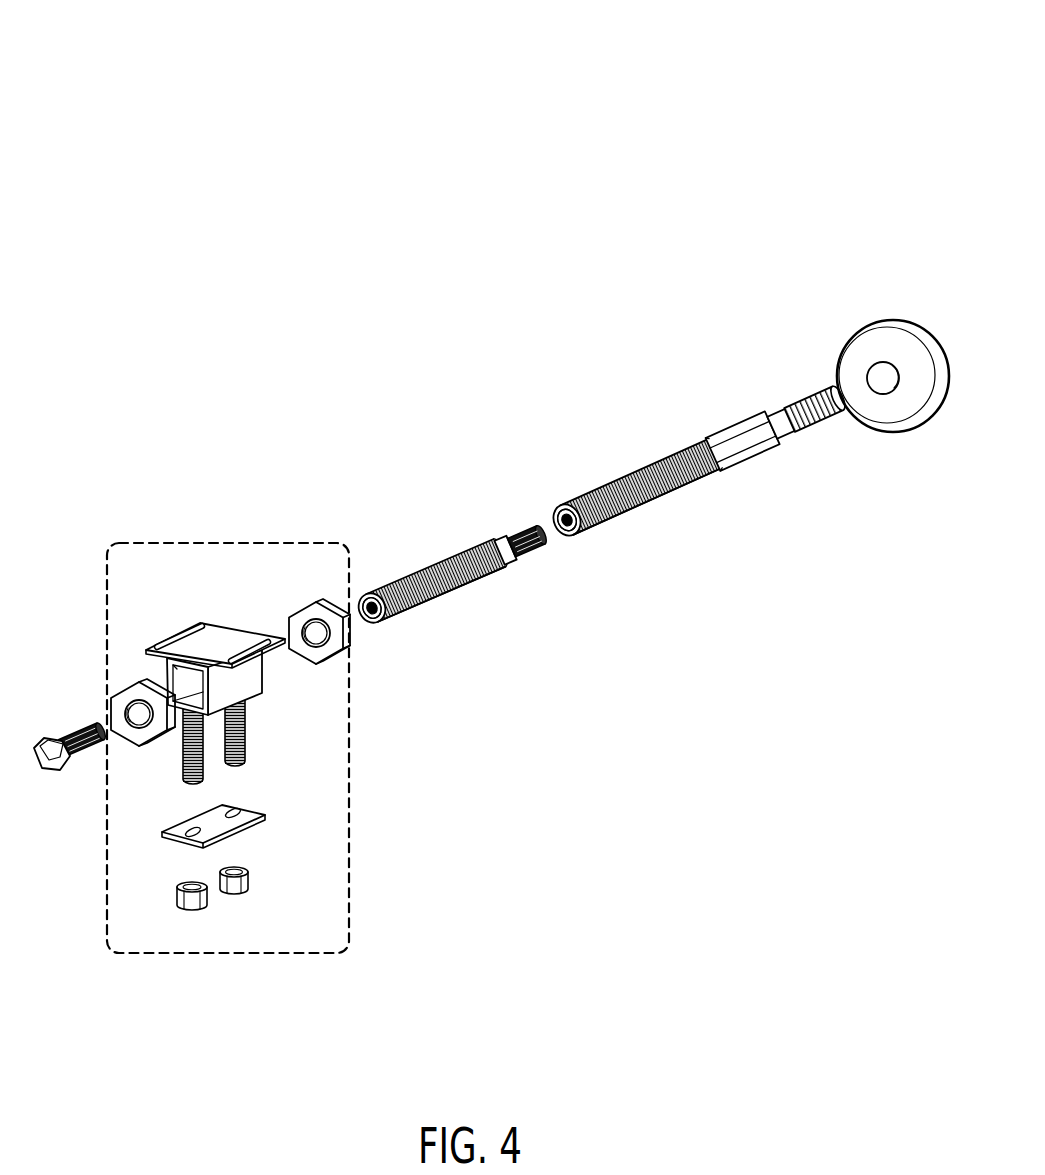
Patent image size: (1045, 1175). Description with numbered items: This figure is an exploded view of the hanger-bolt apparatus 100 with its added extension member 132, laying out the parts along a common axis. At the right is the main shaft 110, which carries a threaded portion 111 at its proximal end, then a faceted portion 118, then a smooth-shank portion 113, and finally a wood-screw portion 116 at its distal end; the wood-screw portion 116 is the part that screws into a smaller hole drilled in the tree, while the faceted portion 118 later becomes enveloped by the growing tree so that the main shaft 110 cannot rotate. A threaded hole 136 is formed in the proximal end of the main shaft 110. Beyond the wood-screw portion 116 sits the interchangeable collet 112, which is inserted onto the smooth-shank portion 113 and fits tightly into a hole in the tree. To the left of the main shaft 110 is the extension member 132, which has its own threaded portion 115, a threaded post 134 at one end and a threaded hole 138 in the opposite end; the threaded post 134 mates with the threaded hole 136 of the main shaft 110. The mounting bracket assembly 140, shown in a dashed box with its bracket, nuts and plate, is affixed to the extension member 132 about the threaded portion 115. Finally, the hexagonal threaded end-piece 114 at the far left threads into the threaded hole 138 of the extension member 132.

The apparatus 100 is at (205, 51).
The main shaft 110 is at (637, 483).
The threaded portion 111 is at (712, 485).
The collet 112 is at (897, 343).
The smooth-shank portion 113 is at (790, 427).
The hexagonal threaded end-piece 114 is at (48, 770).
The threaded portion 115 is at (512, 575).
The wood-screw portion 116 is at (815, 400).
The faceted portion 118 is at (735, 445).
The extension member 132 is at (410, 588).
The threaded post 134 is at (522, 530).
The threaded hole 136 is at (560, 538).
The threaded hole 138 is at (368, 624).
The mounting bracket assembly 140 is at (171, 543).